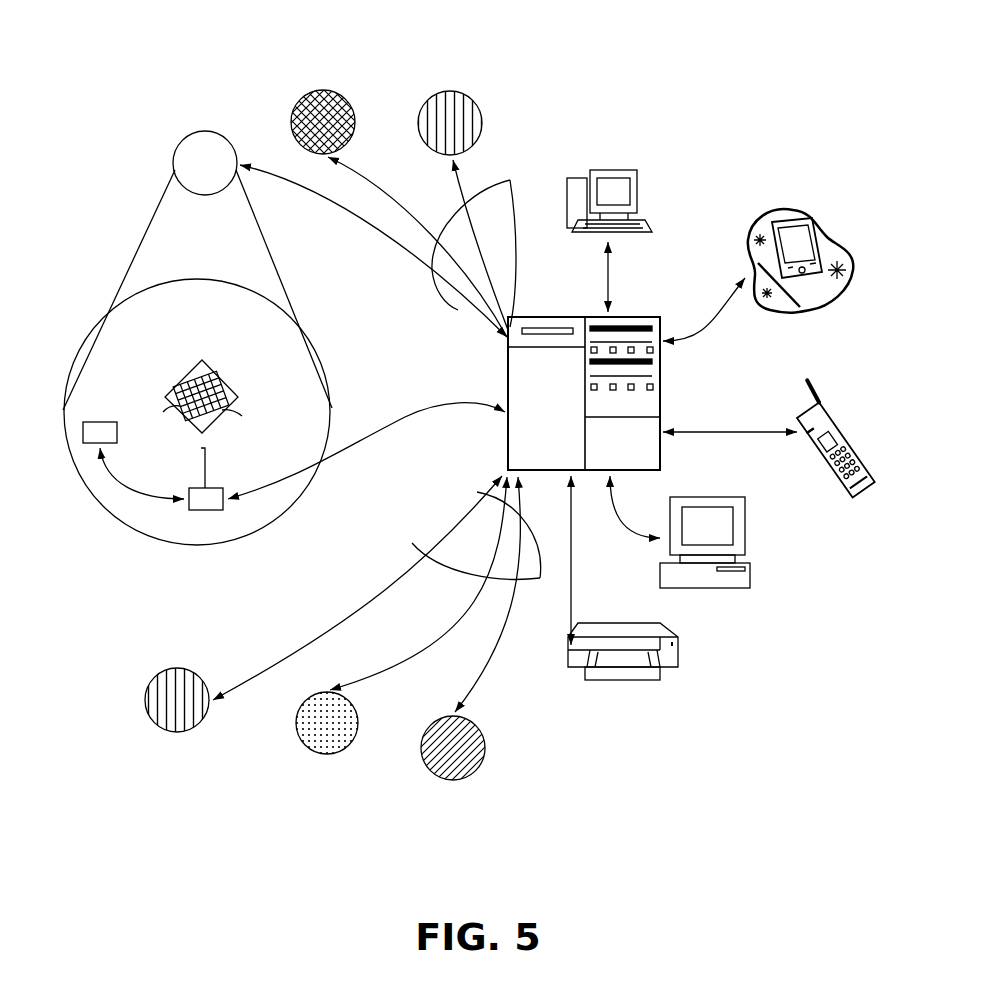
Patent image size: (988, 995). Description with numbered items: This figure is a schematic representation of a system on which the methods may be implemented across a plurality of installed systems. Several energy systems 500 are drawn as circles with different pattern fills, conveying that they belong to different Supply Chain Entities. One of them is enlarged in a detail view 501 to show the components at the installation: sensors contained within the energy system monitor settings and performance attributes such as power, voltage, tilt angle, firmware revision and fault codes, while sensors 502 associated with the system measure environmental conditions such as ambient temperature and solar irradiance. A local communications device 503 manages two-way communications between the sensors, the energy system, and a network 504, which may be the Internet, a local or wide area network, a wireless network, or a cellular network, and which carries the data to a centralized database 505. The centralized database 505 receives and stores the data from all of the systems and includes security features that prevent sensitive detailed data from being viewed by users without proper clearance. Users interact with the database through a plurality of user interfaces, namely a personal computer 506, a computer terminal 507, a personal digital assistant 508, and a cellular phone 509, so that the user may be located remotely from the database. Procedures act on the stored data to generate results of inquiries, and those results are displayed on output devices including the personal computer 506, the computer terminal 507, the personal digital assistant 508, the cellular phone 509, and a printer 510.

The energy systems 500 is at (417, 103).
The tagged object in reader field 501 is at (165, 352).
The sensors associated with the energy system 502 is at (82, 447).
The local communications device 503 is at (200, 514).
The network 504 is at (437, 288).
The centralized database 505 is at (505, 363).
The personal computer 506 is at (608, 168).
The computer terminal 507 is at (722, 590).
The personal digital assistant 508 is at (746, 216).
The cellular phone 509 is at (797, 410).
The printer 510 is at (622, 688).